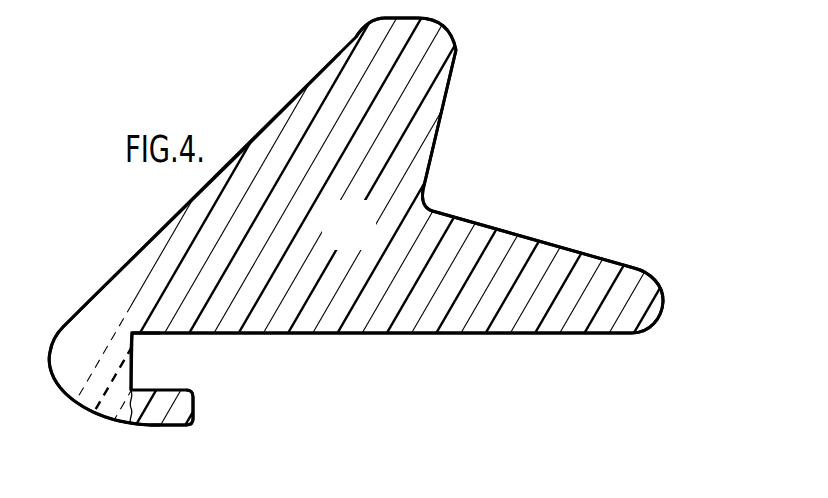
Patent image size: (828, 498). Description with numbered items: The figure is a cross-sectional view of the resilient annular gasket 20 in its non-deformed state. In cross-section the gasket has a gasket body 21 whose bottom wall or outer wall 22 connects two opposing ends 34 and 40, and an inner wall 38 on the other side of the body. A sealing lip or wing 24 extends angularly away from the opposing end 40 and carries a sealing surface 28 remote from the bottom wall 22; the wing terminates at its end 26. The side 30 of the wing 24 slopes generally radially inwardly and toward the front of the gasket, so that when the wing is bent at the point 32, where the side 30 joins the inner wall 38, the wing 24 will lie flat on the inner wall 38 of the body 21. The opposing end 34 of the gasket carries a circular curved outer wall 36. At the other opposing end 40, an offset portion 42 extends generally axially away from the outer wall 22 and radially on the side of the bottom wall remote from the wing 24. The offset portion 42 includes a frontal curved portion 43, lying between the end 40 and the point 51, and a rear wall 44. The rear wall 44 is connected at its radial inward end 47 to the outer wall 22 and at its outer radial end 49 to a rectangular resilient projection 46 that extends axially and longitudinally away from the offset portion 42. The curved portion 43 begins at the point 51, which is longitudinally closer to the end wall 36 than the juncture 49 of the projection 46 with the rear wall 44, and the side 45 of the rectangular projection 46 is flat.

The resilient annular gasket 20 is at (101, 305).
The gasket body 21 is at (367, 240).
The bottom wall or outer wall 22 is at (457, 334).
The sealing lip or wing 24 is at (274, 131).
The end of wing 26 is at (434, 51).
The sealing surface 28 is at (318, 70).
The side of wing 30 is at (448, 105).
The bend point 32 is at (436, 204).
The opposing end 34 is at (619, 321).
The circular curved outer wall 36 is at (660, 318).
The inner wall 38 is at (551, 244).
The opposing end 40 is at (64, 341).
The offset portion 42 is at (79, 335).
The frontal curved portion 43 is at (105, 397).
The rear wall 44 is at (136, 373).
The side of rectangular projection 45 is at (177, 430).
The rectangular resilient portion or projection 46 is at (199, 413).
The radial inward end of rear wall 47 is at (137, 341).
The outer radial end of rear wall 49 is at (130, 414).
The starting point of curved portion 51 is at (160, 435).